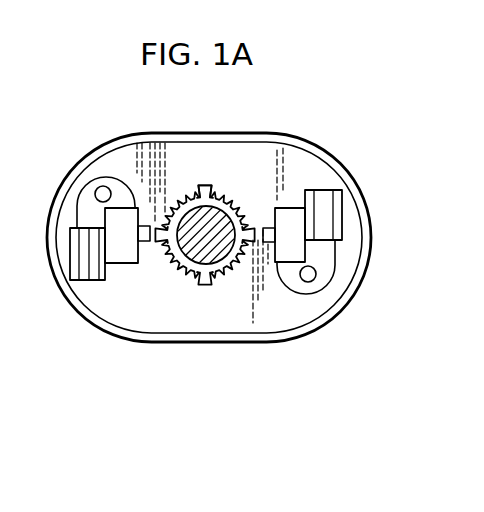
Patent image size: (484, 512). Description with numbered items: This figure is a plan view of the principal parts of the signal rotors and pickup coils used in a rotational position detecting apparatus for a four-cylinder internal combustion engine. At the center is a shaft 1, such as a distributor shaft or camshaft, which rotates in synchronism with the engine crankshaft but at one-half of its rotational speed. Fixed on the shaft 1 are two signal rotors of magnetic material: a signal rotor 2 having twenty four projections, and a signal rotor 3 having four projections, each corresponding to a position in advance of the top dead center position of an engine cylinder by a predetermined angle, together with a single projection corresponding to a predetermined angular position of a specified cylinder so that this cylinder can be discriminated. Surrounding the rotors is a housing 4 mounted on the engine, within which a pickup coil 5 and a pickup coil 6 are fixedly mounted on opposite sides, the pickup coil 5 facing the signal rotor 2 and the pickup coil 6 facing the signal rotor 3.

The shaft 1 is at (190, 236).
The signal rotor 2 is at (238, 194).
The signal rotor 3 is at (209, 187).
The housing 4 is at (284, 338).
The pickup coil 5 is at (126, 258).
The pickup coil 6 is at (287, 213).